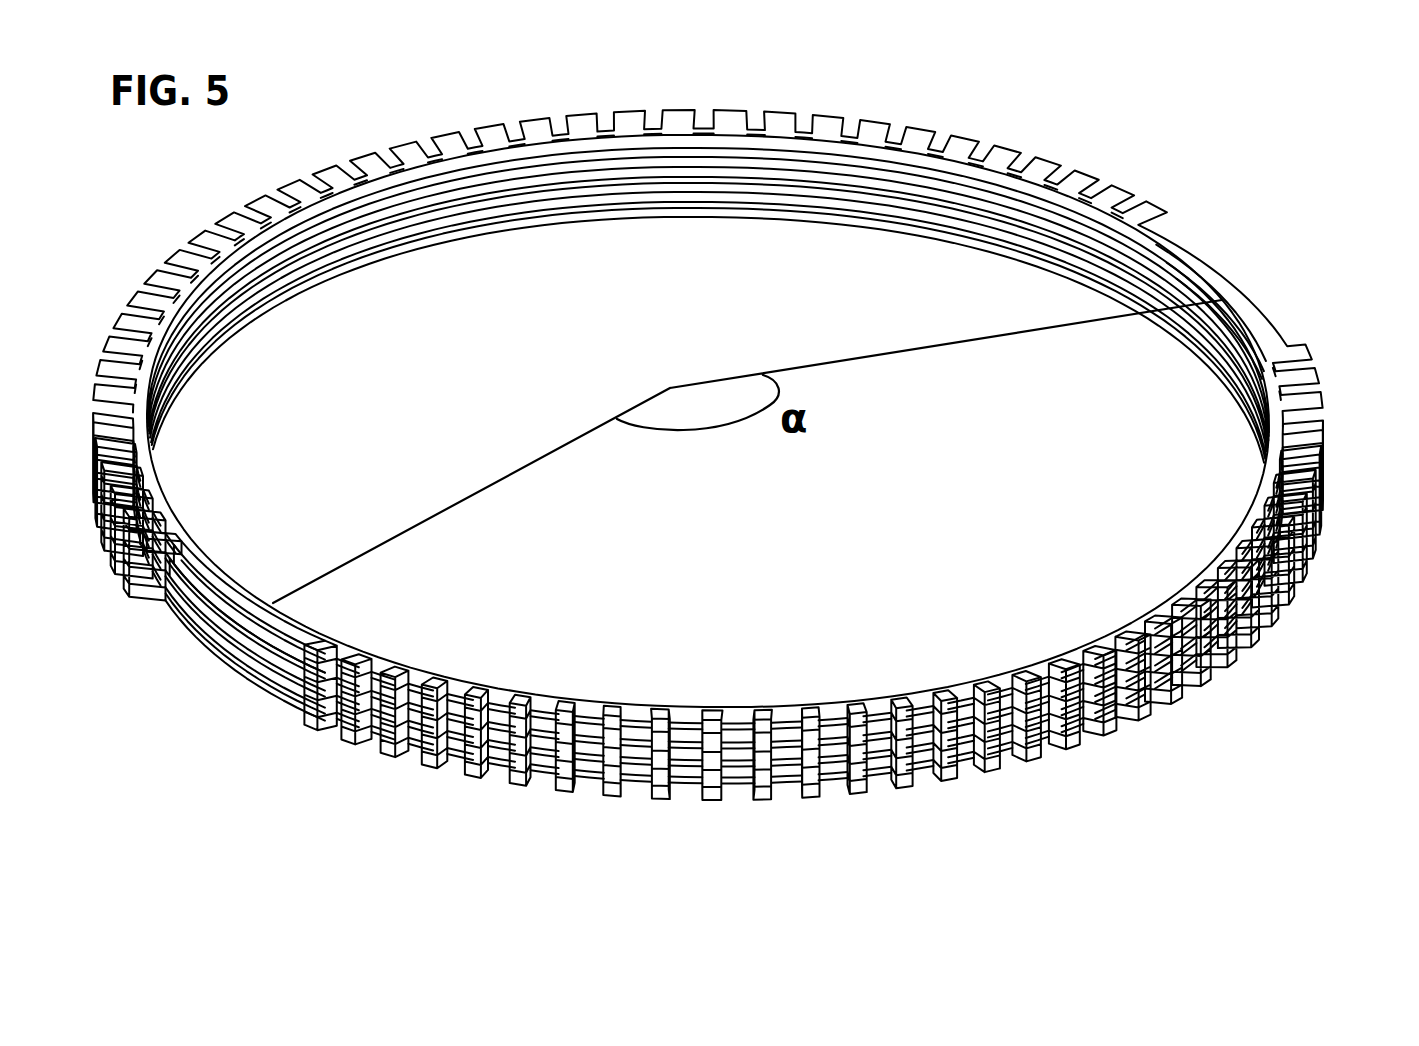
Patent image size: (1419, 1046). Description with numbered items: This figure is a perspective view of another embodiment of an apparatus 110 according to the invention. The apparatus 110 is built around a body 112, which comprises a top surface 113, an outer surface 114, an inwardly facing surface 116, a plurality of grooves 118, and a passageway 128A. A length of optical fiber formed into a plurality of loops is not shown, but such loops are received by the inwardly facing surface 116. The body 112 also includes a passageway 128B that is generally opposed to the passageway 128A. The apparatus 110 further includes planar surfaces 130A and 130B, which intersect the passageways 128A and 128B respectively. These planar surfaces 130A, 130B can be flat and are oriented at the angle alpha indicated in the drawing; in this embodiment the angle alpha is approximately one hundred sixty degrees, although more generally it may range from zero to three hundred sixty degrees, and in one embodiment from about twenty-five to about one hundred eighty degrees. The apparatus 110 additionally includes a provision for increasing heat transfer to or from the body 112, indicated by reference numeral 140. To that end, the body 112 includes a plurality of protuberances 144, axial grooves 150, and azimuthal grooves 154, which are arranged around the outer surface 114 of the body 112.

The apparatus 110 is at (1210, 216).
The body 112 is at (988, 152).
The top surface 113 is at (1318, 512).
The outer surface 114 is at (1253, 647).
The inwardly facing surface 116 is at (1262, 377).
The grooves 118 is at (757, 143).
The passageway 128A is at (237, 655).
The passageway 128B is at (1223, 357).
The planar surface 130A is at (223, 577).
The planar surface 130B is at (1237, 307).
The provision for increasing heat transfer 140 is at (1165, 720).
The protuberances 144 is at (1157, 637).
The axial grooves 150 is at (853, 715).
The azimuthal grooves 154 is at (1050, 737).